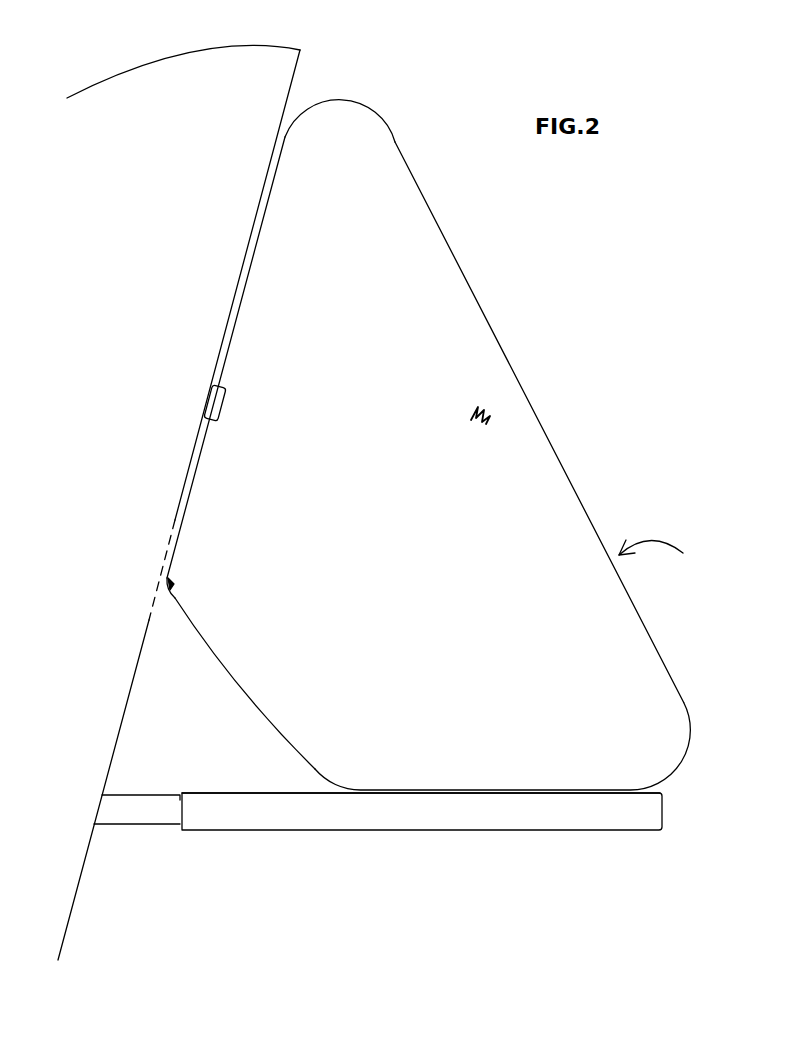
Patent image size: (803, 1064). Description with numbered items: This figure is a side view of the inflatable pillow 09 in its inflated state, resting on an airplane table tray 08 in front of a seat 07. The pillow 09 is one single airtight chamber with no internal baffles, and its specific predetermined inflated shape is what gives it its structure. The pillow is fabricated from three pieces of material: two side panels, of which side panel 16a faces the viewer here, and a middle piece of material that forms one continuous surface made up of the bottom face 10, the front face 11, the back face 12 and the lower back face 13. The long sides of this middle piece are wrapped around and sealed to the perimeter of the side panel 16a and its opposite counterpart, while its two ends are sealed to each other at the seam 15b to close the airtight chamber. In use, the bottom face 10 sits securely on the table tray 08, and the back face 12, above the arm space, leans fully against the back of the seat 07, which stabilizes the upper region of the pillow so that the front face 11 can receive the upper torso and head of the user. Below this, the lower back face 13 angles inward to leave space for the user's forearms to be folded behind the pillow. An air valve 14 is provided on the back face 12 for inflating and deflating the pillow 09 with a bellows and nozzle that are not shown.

The seat 07 is at (141, 55).
The table tray 08 is at (219, 843).
The inflatable pillow 09 is at (656, 565).
The bottom face 10 is at (518, 794).
The front face 11 is at (470, 270).
The back face 12 is at (263, 211).
The lower back face 13 is at (251, 708).
The air valve 14 is at (211, 401).
The seam 15b is at (170, 582).
The side panel 16a is at (493, 412).